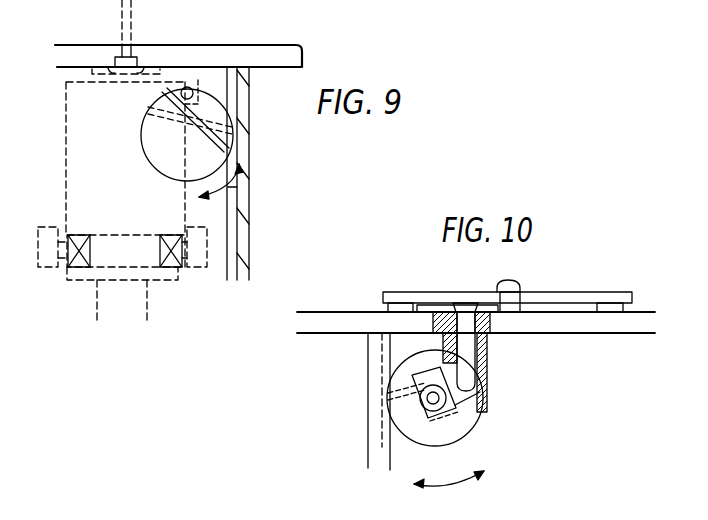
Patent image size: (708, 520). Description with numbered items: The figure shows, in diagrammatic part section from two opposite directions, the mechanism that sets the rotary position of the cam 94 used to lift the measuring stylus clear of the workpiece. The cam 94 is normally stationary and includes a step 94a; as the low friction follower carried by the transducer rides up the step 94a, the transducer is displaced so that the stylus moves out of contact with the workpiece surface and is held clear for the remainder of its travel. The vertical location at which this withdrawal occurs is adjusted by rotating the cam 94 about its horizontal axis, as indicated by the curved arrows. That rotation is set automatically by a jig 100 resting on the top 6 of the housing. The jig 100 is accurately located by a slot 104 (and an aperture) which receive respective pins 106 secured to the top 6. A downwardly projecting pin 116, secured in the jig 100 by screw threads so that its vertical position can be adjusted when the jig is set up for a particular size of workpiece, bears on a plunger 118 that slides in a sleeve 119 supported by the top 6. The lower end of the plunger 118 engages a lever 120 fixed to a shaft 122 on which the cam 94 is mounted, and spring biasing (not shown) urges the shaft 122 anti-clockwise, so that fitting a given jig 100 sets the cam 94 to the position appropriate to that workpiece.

In FIG. 10, the top 6 is at (331, 318).
In FIG. 9, the cam 94 is at (157, 140).
In FIG. 10, the cam 94 is at (412, 428).
In FIG. 9, the step 94a is at (222, 142).
In FIG. 10, the step 94a is at (392, 399).
In FIG. 10, the jig 100 is at (585, 300).
In FIG. 10, the slot 104 is at (522, 292).
In FIG. 10, the pin 106 is at (505, 290).
In FIG. 10, the downwardly projecting pin 116 is at (452, 305).
In FIG. 10, the plunger 118 is at (470, 365).
In FIG. 10, the sleeve 119 is at (480, 393).
In FIG. 10, the lever 120 is at (475, 410).
In FIG. 10, the shaft 122 is at (478, 386).